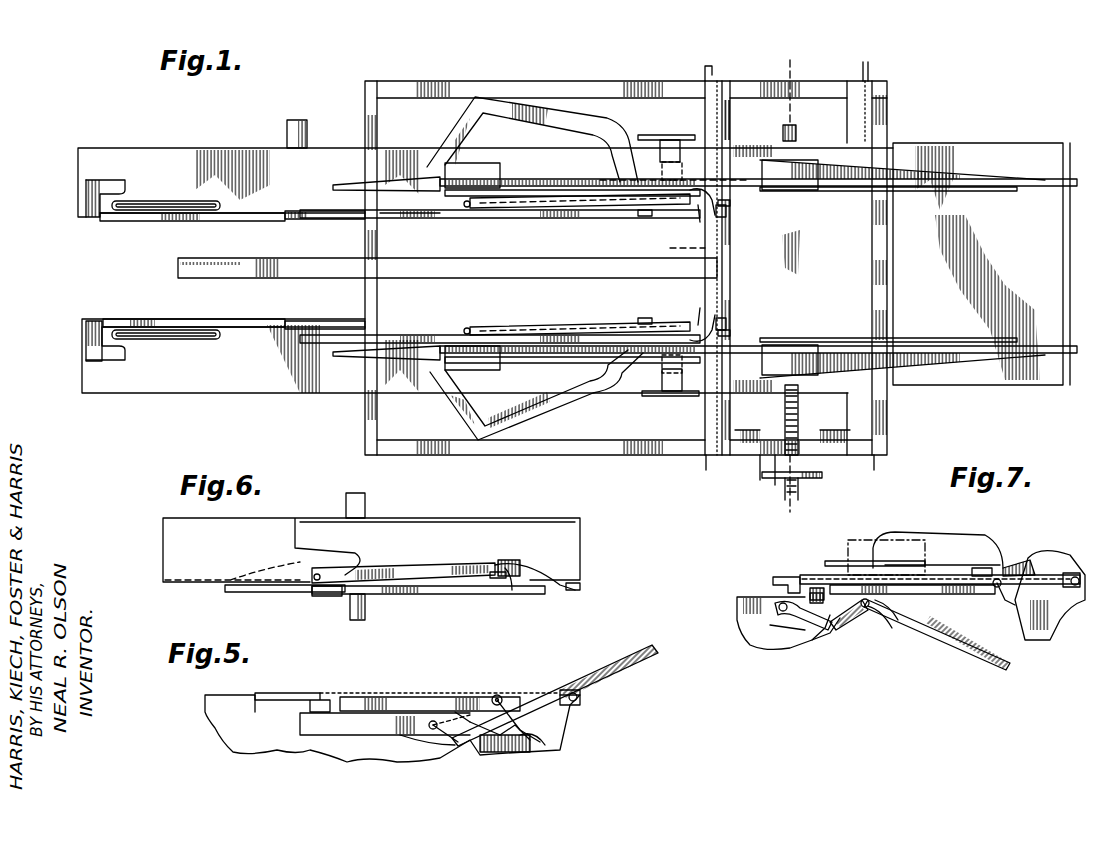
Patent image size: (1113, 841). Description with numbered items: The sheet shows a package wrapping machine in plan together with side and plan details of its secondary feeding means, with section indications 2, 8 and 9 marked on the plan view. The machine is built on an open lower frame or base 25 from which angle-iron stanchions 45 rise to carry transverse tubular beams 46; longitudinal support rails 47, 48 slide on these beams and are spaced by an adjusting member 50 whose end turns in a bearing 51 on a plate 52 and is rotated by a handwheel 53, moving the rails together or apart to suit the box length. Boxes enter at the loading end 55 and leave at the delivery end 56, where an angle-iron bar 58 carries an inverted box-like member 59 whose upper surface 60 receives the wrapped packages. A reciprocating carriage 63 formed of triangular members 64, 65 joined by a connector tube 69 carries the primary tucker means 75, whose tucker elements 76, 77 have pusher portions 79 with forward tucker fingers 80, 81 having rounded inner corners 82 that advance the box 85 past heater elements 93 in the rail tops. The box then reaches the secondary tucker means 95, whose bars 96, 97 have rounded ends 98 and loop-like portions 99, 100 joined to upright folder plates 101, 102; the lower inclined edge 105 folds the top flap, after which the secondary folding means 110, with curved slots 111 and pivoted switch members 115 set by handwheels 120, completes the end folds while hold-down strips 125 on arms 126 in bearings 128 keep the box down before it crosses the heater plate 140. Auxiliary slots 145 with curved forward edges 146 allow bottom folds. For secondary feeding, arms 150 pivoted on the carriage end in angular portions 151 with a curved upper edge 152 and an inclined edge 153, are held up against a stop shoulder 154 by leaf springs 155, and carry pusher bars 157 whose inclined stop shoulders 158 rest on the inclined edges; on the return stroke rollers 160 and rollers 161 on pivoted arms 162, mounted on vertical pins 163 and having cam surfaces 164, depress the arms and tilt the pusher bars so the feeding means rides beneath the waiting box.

In FIG. 1, the section line 2- 2 is at (61, 255).
In FIG. 1, the section line 8- 8 is at (798, 64).
In FIG. 1, the section line 9- 9 is at (661, 238).
In FIG. 1, the lower frame or base 25 is at (365, 438).
In FIG. 1, the angle-iron stanchions 45 is at (705, 72).
In FIG. 1, the tubular beams 46 is at (724, 98).
In FIG. 1, the longitudinal support rail 47 is at (218, 148).
In FIG. 6, the longitudinal support rail 47 is at (200, 578).
In FIG. 5, the longitudinal support rail 47 is at (292, 752).
In FIG. 7, the longitudinal support rail 47 is at (1055, 600).
In FIG. 1, the longitudinal support rail 48 is at (237, 393).
In FIG. 1, the adjusting member 50 is at (800, 408).
In FIG. 1, the bearing 51 is at (800, 468).
In FIG. 1, the plate 52 is at (760, 460).
In FIG. 1, the handwheel 53 is at (780, 480).
In FIG. 1, the loading end 55 is at (68, 148).
In FIG. 1, the delivery end 56 is at (1035, 128).
In FIG. 1, the angle-iron bar 58 is at (570, 278).
In FIG. 1, the inverted box-like member 59 is at (1037, 385).
In FIG. 1, the upper surface 60 is at (1040, 260).
In FIG. 1, the carriage 63 is at (180, 223).
In FIG. 7, the carriage 63 is at (800, 650).
In FIG. 1, the triangularly shaped carriage member 64 is at (232, 222).
In FIG. 6, the triangularly shaped carriage member 64 is at (250, 590).
In FIG. 1, the triangularly shaped carriage member 65 is at (232, 318).
In FIG. 1, the connector tube 69 is at (300, 120).
In FIG. 6, the connector tube 69 is at (362, 503).
In FIG. 1, the primary tucker means 75 is at (116, 175).
In FIG. 1, the primary tucker element 76 is at (115, 222).
In FIG. 1, the primary tucker element 77 is at (105, 319).
In FIG. 1, the pusher portions 79 is at (86, 195).
In FIG. 1, the tucker finger 80 is at (110, 183).
In FIG. 1, the tucker finger 81 is at (108, 362).
In FIG. 1, the rounded inner corners 82 is at (125, 192).
In FIG. 7, the box 85 is at (848, 552).
In FIG. 1, the heater elements 93 is at (168, 203).
In FIG. 1, the secondary tucker means 95 is at (370, 197).
In FIG. 1, the secondary tucker bar 96 is at (352, 178).
In FIG. 7, the secondary tucker bar 96 is at (910, 560).
In FIG. 1, the secondary tucker bar 97 is at (350, 360).
In FIG. 1, the rounded end 98 is at (335, 183).
In FIG. 1, the loop-like portion 99 is at (540, 110).
In FIG. 1, the loop-like portion 100 is at (565, 420).
In FIG. 1, the upright plate 101 is at (643, 177).
In FIG. 7, the upright plate 101 is at (960, 545).
In FIG. 1, the upright plate 102 is at (638, 353).
In FIG. 7, the lower inclined edge 105 is at (890, 545).
In FIG. 1, the secondary folding means 110 is at (692, 160).
In FIG. 7, the slots 111 is at (985, 565).
In FIG. 7, the switch member 115 is at (1010, 565).
In FIG. 1, the handwheels 120 is at (665, 135).
In FIG. 1, the horizontal strips 125 is at (980, 205).
In FIG. 1, the arms 126 is at (852, 195).
In FIG. 1, the bearings 128 is at (775, 172).
In FIG. 1, the heater plate 140 is at (835, 271).
In FIG. 1, the slots 145 is at (700, 195).
In FIG. 6, the slots 145 is at (520, 560).
In FIG. 1, the forward edges 146 is at (723, 222).
In FIG. 6, the forward edges 146 is at (548, 583).
In FIG. 1, the arms 150 is at (296, 222).
In FIG. 6, the arms 150 is at (362, 590).
In FIG. 5, the arms 150 is at (478, 745).
In FIG. 7, the arms 150 is at (822, 640).
In FIG. 5, the angular end portion 151 is at (508, 740).
In FIG. 7, the angular end portion 151 is at (865, 612).
In FIG. 5, the curved upper edge 152 is at (505, 698).
In FIG. 7, the curved upper edge 152 is at (838, 578).
In FIG. 5, the inclined upper edge 153 is at (535, 745).
In FIG. 7, the inclined upper edge 153 is at (885, 612).
In FIG. 5, the stop shoulder 154 is at (462, 712).
In FIG. 5, the leaf springs 155 is at (433, 745).
In FIG. 7, the leaf springs 155 is at (778, 640).
In FIG. 1, the pusher bar 157 is at (424, 222).
In FIG. 6, the pusher bar 157 is at (470, 592).
In FIG. 5, the pusher bar 157 is at (622, 675).
In FIG. 7, the pusher bar 157 is at (945, 648).
In FIG. 5, the inclined stop shoulder 158 is at (540, 715).
In FIG. 7, the inclined stop shoulder 158 is at (860, 612).
In FIG. 1, the rollers 160 is at (735, 205).
In FIG. 6, the rollers 160 is at (580, 590).
In FIG. 5, the rollers 160 is at (585, 700).
In FIG. 7, the rollers 160 is at (1076, 578).
In FIG. 1, the rollers 161 is at (640, 215).
In FIG. 6, the rollers 161 is at (505, 583).
In FIG. 5, the rollers 161 is at (495, 698).
In FIG. 7, the rollers 161 is at (1030, 605).
In FIG. 1, the arms 162 is at (557, 222).
In FIG. 6, the arms 162 is at (430, 568).
In FIG. 5, the arms 162 is at (402, 702).
In FIG. 7, the arms 162 is at (1015, 612).
In FIG. 1, the vertical pins 163 is at (470, 222).
In FIG. 6, the vertical pins 163 is at (312, 580).
In FIG. 5, the vertical pins 163 is at (318, 700).
In FIG. 7, the vertical pins 163 is at (792, 585).
In FIG. 1, the cam surfaces 164 is at (505, 222).
In FIG. 6, the cam surfaces 164 is at (348, 590).